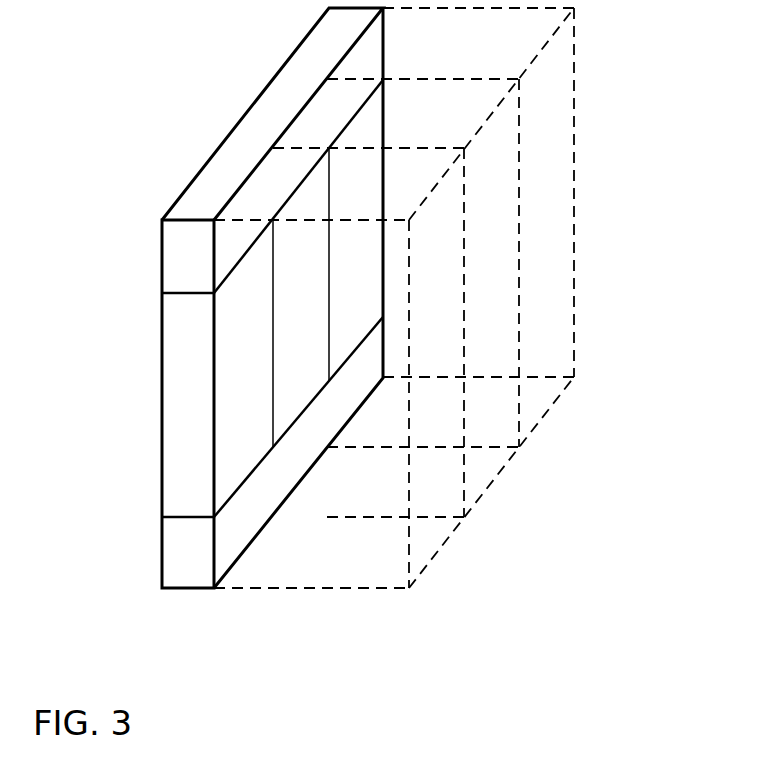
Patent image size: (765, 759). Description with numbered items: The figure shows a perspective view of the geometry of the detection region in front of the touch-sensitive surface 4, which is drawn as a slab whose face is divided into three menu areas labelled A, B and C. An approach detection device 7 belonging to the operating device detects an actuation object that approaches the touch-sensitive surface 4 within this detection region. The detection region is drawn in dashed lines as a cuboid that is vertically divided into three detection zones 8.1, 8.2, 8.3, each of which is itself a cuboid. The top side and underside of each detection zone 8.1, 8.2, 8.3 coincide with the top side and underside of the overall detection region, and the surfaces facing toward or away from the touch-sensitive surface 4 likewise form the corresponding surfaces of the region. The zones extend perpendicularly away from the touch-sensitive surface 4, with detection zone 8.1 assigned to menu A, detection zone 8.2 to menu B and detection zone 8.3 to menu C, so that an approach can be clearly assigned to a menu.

The touch-sensitive surface 4 is at (185, 404).
The approach detection device 7 is at (177, 260).
The detection zone 8.1 is at (423, 543).
The detection zone 8.2 is at (474, 477).
The detection zone 8.3 is at (527, 399).